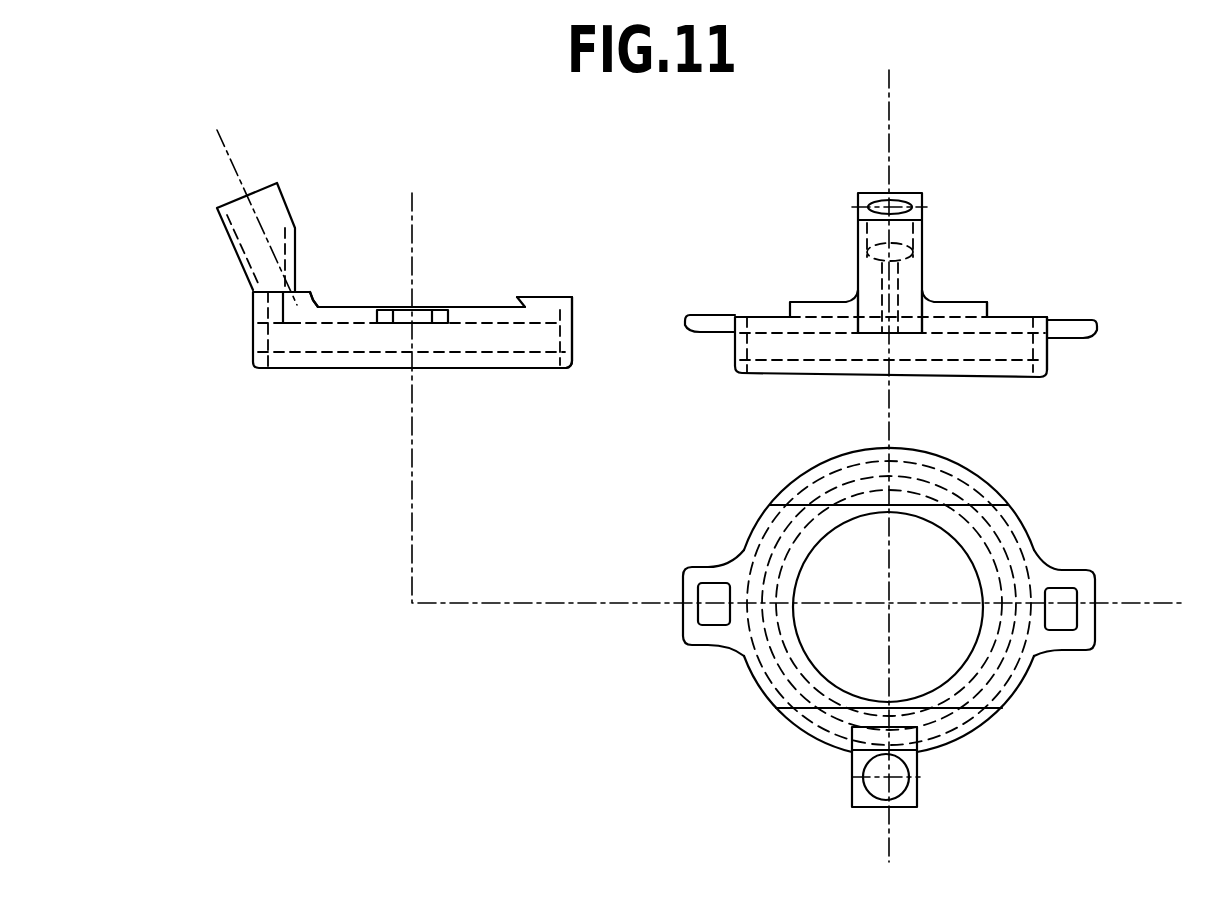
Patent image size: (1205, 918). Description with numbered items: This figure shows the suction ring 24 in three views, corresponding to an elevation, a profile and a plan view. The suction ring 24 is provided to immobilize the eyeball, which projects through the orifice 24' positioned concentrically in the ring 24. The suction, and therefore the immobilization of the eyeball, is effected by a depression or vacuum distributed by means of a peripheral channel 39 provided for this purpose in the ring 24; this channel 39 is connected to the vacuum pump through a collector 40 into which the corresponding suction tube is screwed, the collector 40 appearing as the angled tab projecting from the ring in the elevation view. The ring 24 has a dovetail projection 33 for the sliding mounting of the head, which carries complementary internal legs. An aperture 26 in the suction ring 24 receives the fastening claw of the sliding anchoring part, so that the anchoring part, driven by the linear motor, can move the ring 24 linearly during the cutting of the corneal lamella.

The suction ring 24 is at (696, 500).
The orifice 24' is at (972, 586).
The aperture 26 is at (712, 617).
The dovetail projection 33 is at (315, 303).
The peripheral channel 39 is at (553, 327).
The collector 40 is at (263, 203).